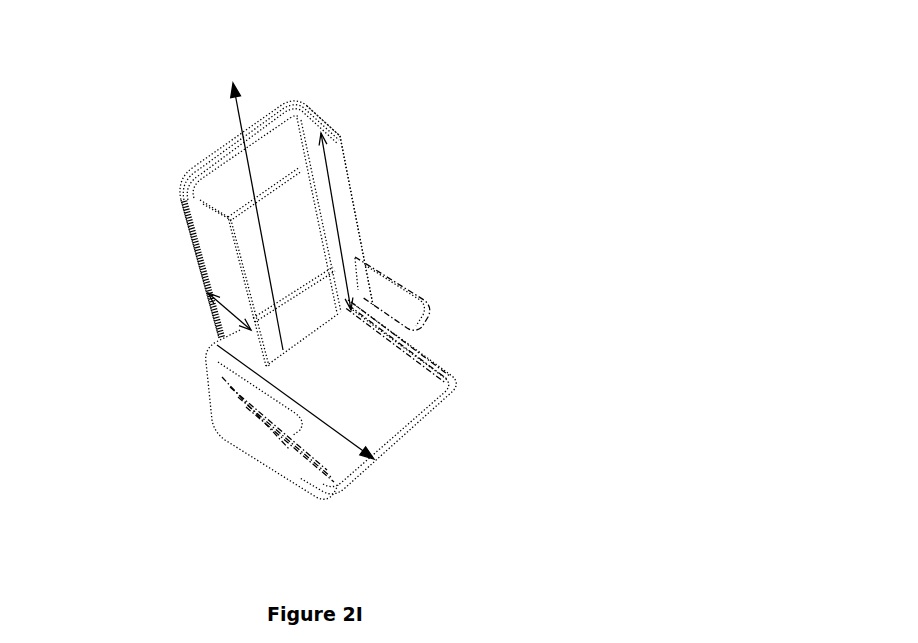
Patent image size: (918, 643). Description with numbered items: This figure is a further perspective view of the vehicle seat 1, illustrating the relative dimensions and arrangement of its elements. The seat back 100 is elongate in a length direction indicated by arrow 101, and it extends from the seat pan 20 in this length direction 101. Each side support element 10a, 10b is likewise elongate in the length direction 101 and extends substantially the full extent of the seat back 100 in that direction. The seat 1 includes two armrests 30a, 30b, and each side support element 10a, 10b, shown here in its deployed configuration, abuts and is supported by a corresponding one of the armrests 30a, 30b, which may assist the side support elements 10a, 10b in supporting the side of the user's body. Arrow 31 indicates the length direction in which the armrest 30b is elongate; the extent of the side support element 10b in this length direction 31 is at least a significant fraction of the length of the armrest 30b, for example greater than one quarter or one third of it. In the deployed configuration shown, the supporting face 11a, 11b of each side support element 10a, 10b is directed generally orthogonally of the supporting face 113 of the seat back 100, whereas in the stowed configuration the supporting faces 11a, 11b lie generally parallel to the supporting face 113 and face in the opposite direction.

The vehicle seat 1 is at (492, 64).
The seat back 100 is at (158, 310).
The seat pan 20 is at (382, 415).
The side support element 10a is at (335, 134).
The side support element 10b is at (217, 248).
The supporting face 11a is at (340, 182).
The supporting face 11b is at (215, 203).
The supporting face of the seat back 113 is at (272, 153).
The length direction 101 is at (257, 216).
The armrest 30a is at (417, 312).
The armrest 30b is at (262, 393).
The length direction 31 is at (295, 402).